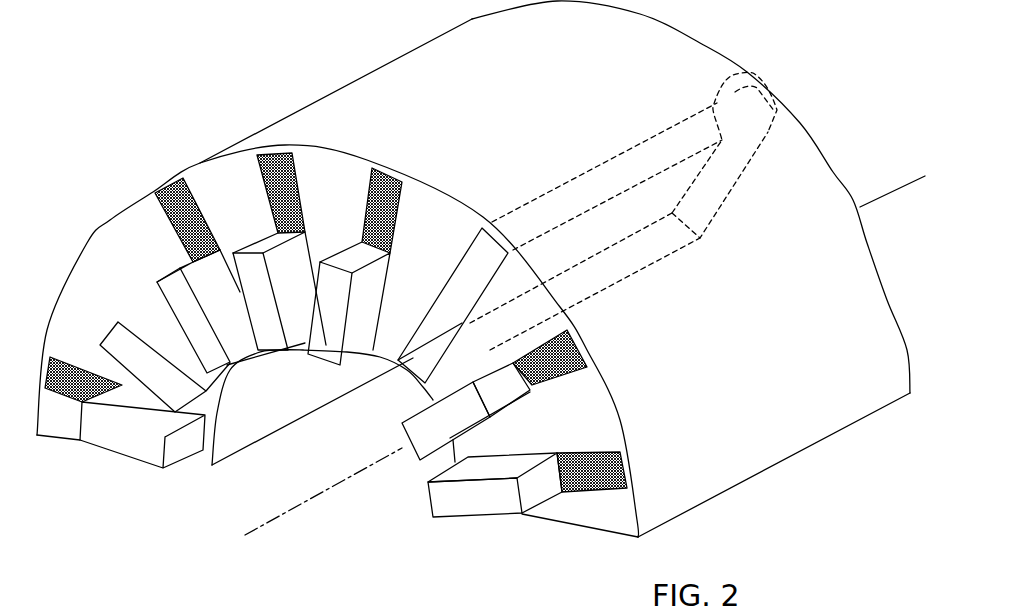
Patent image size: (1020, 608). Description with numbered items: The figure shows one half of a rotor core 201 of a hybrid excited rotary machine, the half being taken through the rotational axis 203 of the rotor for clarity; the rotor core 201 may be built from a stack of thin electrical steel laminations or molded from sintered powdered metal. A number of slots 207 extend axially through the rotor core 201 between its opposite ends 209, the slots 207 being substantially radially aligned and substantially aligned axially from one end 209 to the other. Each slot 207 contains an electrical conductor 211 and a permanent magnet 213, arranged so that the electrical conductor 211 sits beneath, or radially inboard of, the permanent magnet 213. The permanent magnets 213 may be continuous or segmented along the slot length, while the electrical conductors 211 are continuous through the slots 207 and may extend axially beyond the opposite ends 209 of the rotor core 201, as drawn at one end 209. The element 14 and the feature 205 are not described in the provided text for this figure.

The electric machine stator 14 is at (840, 133).
The rotor core 201 is at (352, 118).
The rotational axis 203 is at (279, 514).
The outer surface 205 is at (388, 61).
The slot 207 is at (742, 73).
The opposite ends 209 is at (838, 197).
The electrical conductor 211 is at (146, 450).
The permanent magnet 213 is at (94, 293).